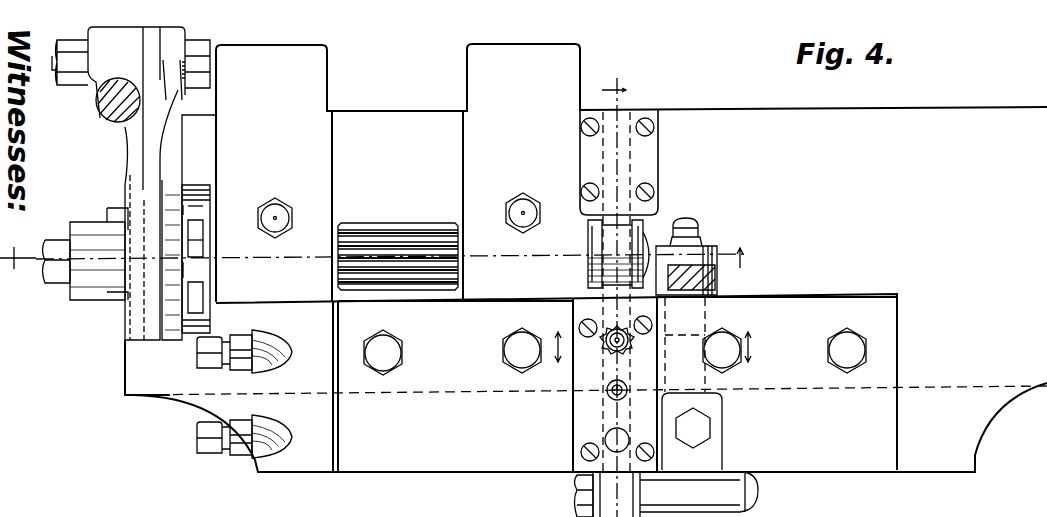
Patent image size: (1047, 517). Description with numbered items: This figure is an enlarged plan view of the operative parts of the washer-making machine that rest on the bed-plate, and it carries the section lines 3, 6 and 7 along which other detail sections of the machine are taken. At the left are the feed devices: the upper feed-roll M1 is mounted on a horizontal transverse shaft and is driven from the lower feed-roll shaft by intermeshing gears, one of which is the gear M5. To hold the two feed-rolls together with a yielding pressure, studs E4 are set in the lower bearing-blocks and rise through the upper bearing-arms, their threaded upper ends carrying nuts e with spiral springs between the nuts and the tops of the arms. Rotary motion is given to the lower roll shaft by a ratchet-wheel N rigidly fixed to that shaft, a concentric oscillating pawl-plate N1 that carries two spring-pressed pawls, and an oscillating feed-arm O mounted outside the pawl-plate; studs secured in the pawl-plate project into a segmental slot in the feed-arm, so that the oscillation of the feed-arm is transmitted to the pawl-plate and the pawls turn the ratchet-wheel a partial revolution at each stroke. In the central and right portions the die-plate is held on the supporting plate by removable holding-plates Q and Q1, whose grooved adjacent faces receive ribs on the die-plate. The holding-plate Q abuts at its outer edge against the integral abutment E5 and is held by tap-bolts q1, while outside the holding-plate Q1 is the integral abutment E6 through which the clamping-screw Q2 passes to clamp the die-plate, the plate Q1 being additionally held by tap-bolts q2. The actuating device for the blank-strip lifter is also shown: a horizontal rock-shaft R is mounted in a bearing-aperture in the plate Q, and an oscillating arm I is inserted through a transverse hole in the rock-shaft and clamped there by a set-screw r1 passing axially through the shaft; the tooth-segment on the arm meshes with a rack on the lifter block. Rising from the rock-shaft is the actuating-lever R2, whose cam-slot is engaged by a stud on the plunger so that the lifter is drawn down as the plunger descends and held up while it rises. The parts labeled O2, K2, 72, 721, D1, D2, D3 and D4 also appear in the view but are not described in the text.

The clamping bolt O2 is at (131, 108).
The feed-arm O is at (170, 215).
The ratchet-wheel N is at (212, 190).
The pawl-plate N1 is at (172, 187).
The slot 72 is at (196, 208).
The slot 721 is at (196, 241).
The bolt K2 is at (117, 273).
The stud E4 is at (524, 208).
The nut e is at (545, 216).
The gear M5 is at (413, 230).
The section line 3 3 is at (616, 289).
The upper feed-roll M1 is at (620, 240).
The set-screw r1 is at (698, 224).
The section line 6 6 is at (744, 252).
The actuating-lever R2 is at (707, 270).
The rock-shaft R is at (697, 308).
The section line 7 7 is at (654, 346).
The tap-bolt q2 is at (507, 358).
The tap-bolt q1 is at (837, 360).
The abutment E5 is at (917, 382).
The abutment E6 is at (282, 394).
The clamping-screw Q2 is at (205, 440).
The star nut D2 is at (606, 345).
The oscillating arm I is at (628, 344).
The nut D3 is at (607, 392).
The bearing D4 is at (627, 434).
The bracket plate D1 is at (590, 423).
The holding-plate Q is at (777, 370).
The holding-plate Q1 is at (455, 371).